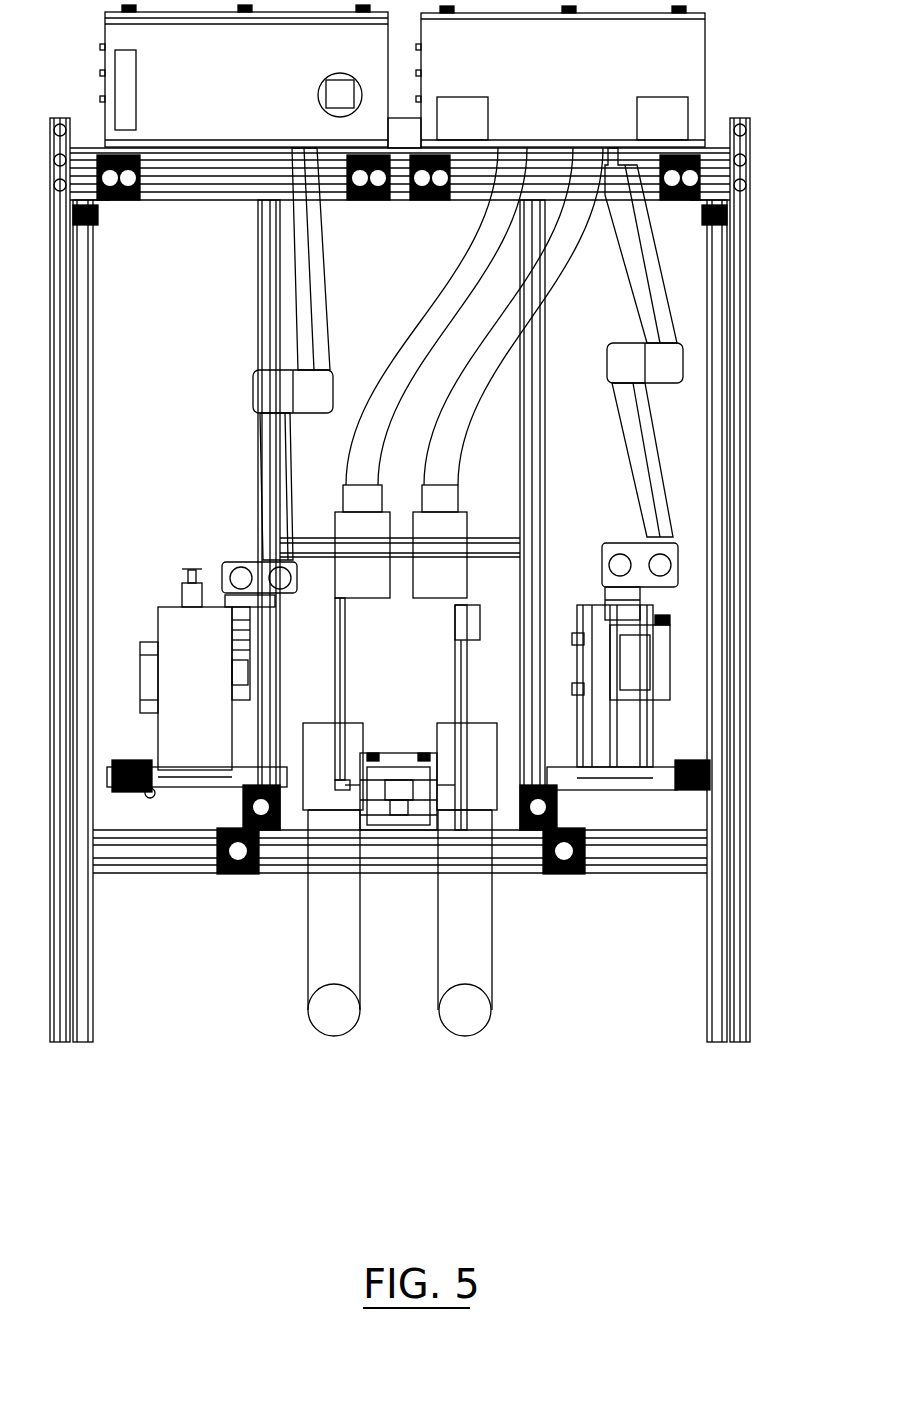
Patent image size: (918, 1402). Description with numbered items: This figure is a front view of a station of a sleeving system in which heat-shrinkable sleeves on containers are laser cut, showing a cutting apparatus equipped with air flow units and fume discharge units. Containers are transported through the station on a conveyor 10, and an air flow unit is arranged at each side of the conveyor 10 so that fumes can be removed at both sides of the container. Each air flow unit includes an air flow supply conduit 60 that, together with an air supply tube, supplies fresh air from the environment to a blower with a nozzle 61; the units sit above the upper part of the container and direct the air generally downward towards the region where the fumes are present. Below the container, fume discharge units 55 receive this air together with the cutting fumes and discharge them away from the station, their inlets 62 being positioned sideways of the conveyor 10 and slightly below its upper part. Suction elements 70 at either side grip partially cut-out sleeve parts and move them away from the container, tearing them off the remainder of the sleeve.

The conveyor 10 is at (402, 765).
The fume discharge units 55 is at (490, 1047).
The air flow supply conduit 60 is at (345, 570).
The nozzle 61 is at (435, 590).
The inlets 62 is at (323, 762).
The suction elements 70 is at (240, 660).